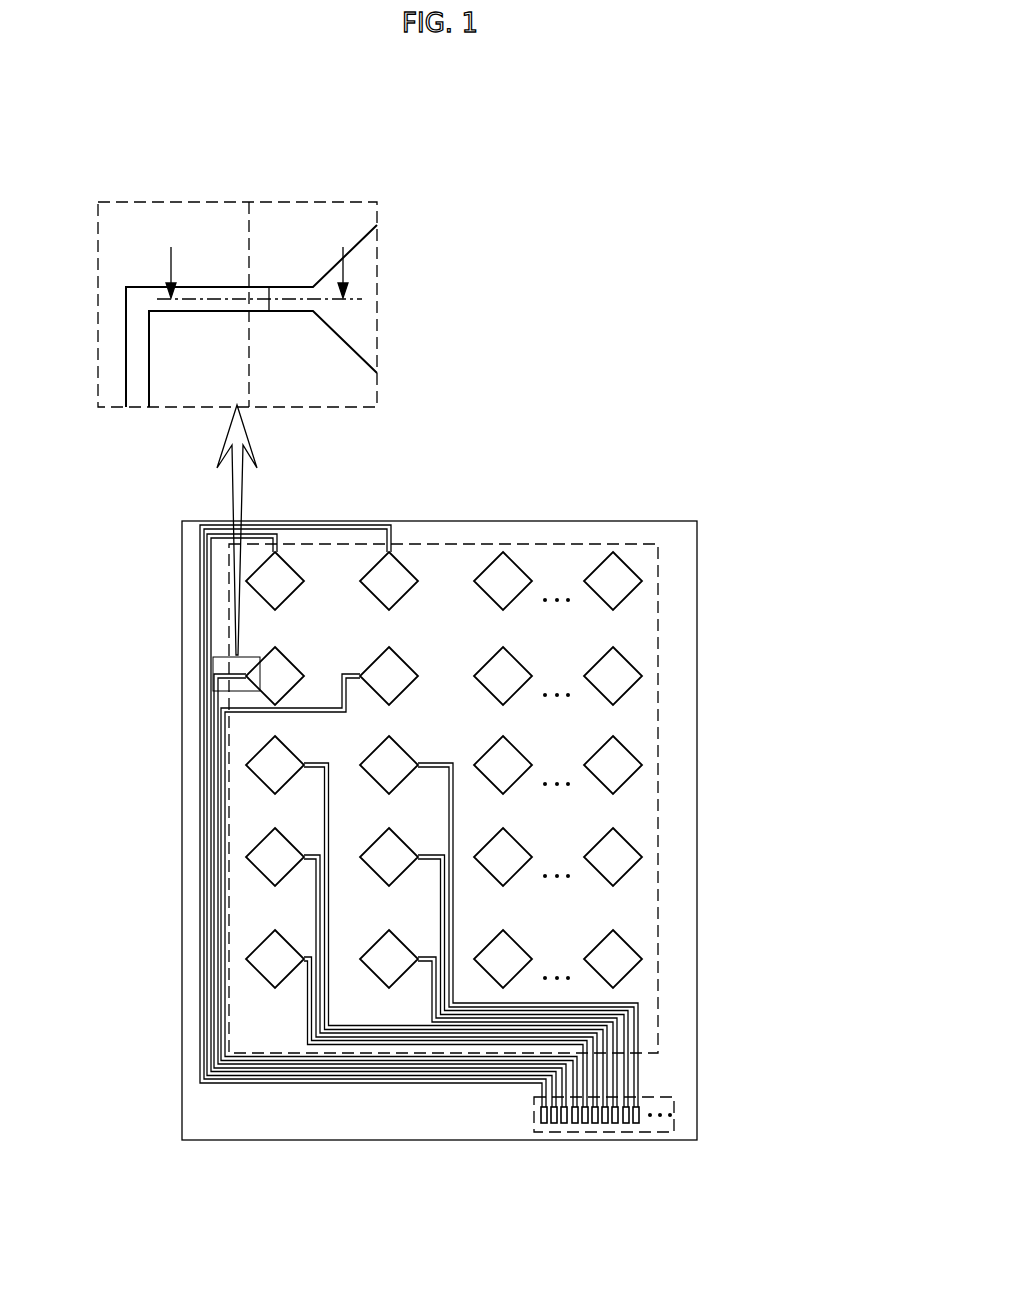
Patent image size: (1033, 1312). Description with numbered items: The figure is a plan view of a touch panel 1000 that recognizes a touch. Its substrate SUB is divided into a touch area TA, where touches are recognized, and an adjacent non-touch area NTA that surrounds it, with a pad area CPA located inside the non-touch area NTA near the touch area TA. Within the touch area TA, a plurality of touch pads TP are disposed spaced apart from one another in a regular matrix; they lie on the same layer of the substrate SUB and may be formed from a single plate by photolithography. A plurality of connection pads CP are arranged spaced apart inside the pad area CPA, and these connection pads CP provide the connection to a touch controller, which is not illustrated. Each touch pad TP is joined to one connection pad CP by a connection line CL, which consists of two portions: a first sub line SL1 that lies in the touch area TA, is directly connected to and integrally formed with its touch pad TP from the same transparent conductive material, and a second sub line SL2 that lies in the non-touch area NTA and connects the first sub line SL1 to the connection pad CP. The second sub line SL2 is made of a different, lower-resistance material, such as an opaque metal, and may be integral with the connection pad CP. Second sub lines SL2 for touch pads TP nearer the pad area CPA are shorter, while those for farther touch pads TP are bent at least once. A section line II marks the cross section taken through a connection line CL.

The touch panel 1000 is at (460, 171).
The substrate SUB is at (697, 800).
The touch area TA is at (660, 672).
The non-touch area NTA is at (138, 222).
The touch pad TP is at (398, 562).
The connection line CL is at (439, 666).
The first sub line SL1 is at (293, 311).
The second sub line SL2 is at (206, 311).
The cross-section line II is at (259, 257).
The pad area CPA is at (676, 1115).
The connection pad CP is at (545, 1124).